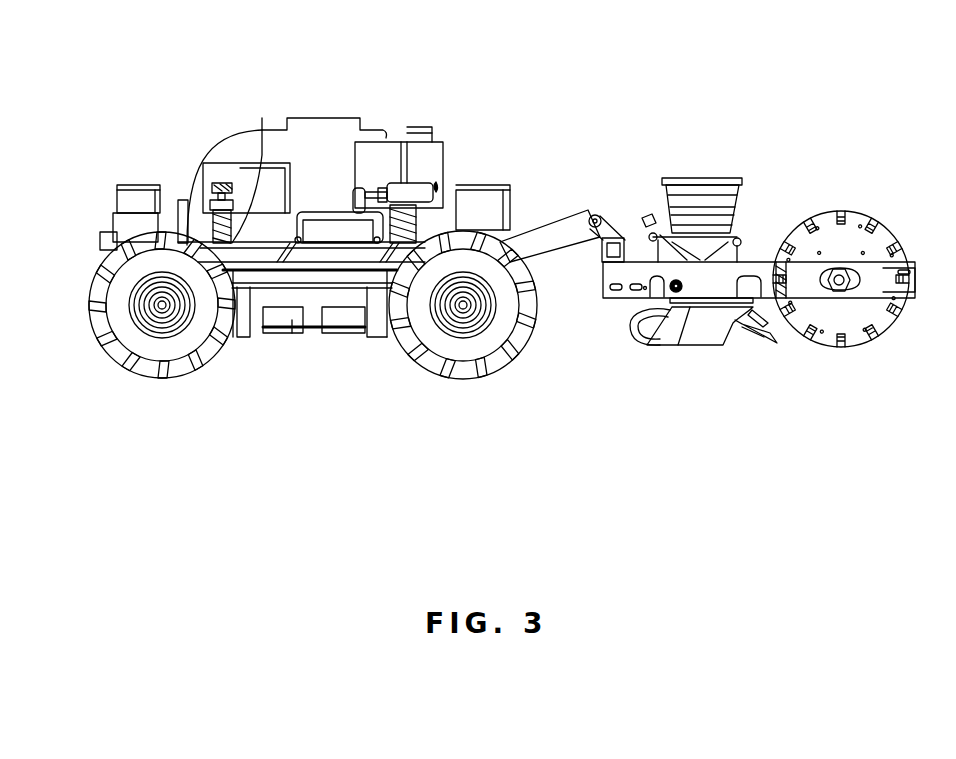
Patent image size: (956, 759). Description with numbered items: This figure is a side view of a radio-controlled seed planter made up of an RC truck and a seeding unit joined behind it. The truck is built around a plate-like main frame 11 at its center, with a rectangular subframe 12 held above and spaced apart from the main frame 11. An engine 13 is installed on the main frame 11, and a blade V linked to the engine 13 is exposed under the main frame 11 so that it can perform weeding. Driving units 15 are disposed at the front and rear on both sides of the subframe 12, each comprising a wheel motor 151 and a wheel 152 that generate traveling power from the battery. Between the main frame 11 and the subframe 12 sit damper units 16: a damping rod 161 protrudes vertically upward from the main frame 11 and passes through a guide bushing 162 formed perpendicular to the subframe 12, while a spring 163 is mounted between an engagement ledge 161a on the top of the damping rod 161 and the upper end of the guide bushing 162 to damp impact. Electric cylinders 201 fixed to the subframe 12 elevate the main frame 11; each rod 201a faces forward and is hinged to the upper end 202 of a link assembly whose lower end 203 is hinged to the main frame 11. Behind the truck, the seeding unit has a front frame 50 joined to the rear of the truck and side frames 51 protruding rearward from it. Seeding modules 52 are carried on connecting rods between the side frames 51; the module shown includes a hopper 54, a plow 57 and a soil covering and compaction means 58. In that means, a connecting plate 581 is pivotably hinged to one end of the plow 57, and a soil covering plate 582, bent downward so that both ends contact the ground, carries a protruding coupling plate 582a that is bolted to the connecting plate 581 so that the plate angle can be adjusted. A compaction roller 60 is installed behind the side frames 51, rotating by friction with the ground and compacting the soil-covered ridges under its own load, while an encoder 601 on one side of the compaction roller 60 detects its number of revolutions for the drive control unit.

The driving unit 15 is at (84, 243).
The engine 13 is at (318, 118).
The main frame 11 is at (248, 320).
The subframe 12 is at (310, 320).
The wheel motor 151 is at (140, 187).
The wheel 152 is at (151, 361).
The damper unit 16 is at (253, 84).
The damping rod 161 is at (182, 193).
The engagement ledge 161a is at (215, 188).
The guide bushing 162 is at (263, 168).
The spring 163 is at (243, 197).
The electric cylinder 201 is at (418, 190).
The rod 201a is at (372, 200).
The upper end of link assembly 202 is at (332, 205).
The lower end of link assembly 203 is at (273, 320).
The blade V is at (292, 320).
The seeding module 52 is at (659, 126).
The front frame 50 is at (562, 232).
The side frame 51 is at (763, 258).
The hopper 54 is at (704, 178).
The compaction roller 60 is at (860, 214).
The encoder 601 is at (843, 293).
The plow 57 is at (686, 352).
The soil covering and compaction means 58 is at (830, 407).
The connecting plate 581 is at (769, 322).
The soil covering plate 582 is at (751, 323).
The coupling plate 582a is at (765, 330).